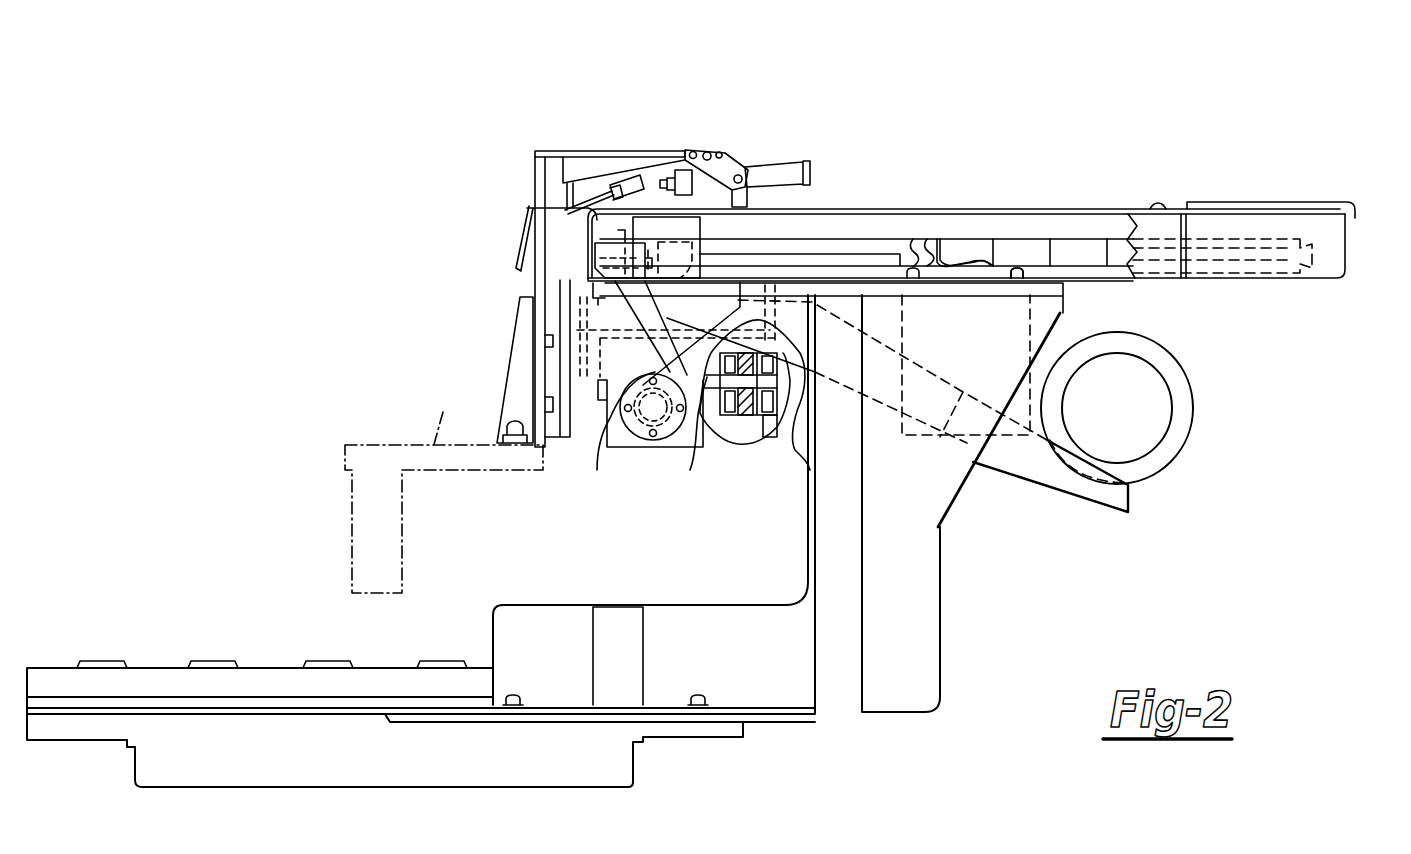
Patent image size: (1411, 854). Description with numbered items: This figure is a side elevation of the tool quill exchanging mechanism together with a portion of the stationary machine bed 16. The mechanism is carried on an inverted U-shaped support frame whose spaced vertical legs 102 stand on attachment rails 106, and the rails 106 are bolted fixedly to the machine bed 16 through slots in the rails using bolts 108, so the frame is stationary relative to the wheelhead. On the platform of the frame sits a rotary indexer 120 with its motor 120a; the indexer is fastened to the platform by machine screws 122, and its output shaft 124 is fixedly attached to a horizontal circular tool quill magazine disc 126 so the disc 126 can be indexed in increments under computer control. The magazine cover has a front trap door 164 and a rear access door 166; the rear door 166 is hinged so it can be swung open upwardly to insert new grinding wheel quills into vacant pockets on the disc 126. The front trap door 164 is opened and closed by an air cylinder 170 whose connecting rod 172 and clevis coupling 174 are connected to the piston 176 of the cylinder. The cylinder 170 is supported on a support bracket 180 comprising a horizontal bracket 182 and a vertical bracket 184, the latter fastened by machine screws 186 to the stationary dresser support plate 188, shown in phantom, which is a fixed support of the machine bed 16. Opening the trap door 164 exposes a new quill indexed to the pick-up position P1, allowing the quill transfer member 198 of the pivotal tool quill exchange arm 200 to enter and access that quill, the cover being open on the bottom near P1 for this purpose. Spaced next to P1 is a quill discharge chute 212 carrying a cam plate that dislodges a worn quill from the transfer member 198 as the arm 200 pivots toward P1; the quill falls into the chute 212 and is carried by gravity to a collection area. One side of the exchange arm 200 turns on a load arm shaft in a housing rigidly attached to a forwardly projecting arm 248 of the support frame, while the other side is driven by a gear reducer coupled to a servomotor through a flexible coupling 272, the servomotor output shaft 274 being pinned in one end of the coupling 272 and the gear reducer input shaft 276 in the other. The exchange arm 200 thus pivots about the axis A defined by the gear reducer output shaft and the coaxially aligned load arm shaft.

The machine bed 16 is at (693, 736).
The vertical legs 102 is at (927, 590).
The attachment rails 106 is at (800, 715).
The bolts 108 is at (523, 696).
The rotary indexer 120 is at (1030, 323).
The motor 120a is at (1195, 392).
The machine screws 122 is at (1018, 266).
The output shaft 124 is at (953, 245).
The tool quill magazine disc 126 is at (913, 243).
The front trap door 164 is at (520, 222).
The rear access door 166 is at (1260, 209).
The air cylinder 170 is at (783, 170).
The connecting rod 172 is at (590, 177).
The clevis coupling 174 is at (643, 183).
The piston 176 is at (650, 230).
The support bracket 180 is at (541, 139).
The horizontal bracket 182 is at (608, 148).
The vertical bracket 184 is at (535, 168).
The machine screws 186 is at (548, 405).
The dresser support plate 188 is at (515, 370).
The quill transfer member 198 is at (598, 258).
The tool quill exchange arm 200 is at (597, 442).
The quill discharge chute 212 is at (662, 325).
The forwardly projecting arm 248 is at (637, 427).
The flexible coupling 272 is at (747, 413).
The output shaft 274 is at (790, 430).
The input shaft 276 is at (707, 380).
The axis A is at (653, 410).
The pick-up position P1 is at (686, 152).